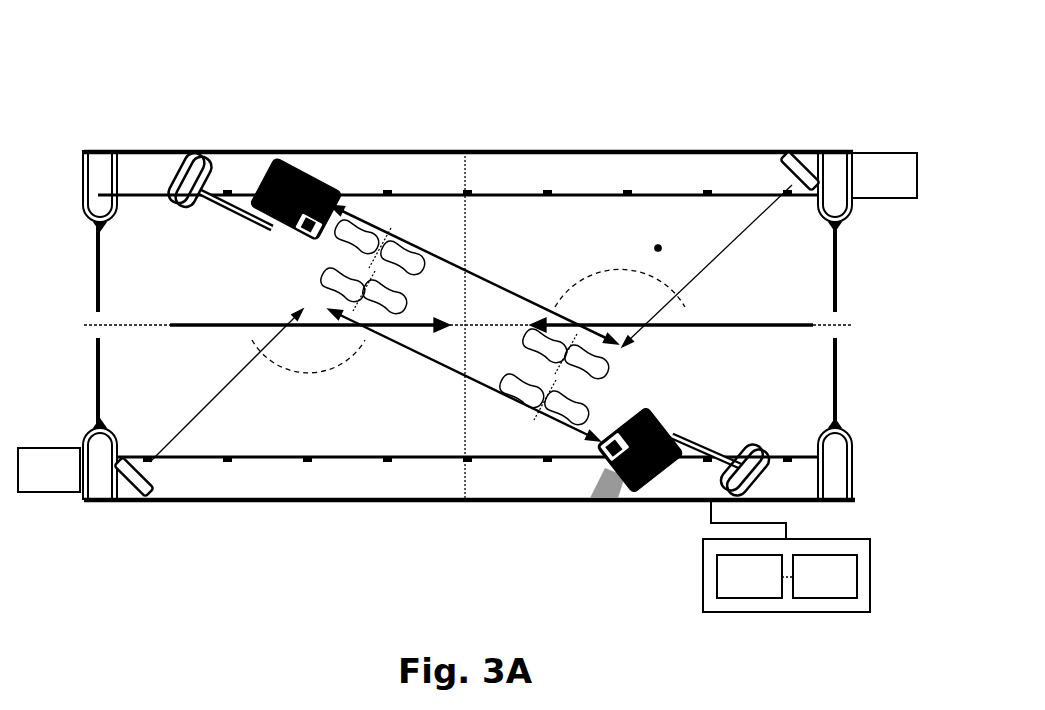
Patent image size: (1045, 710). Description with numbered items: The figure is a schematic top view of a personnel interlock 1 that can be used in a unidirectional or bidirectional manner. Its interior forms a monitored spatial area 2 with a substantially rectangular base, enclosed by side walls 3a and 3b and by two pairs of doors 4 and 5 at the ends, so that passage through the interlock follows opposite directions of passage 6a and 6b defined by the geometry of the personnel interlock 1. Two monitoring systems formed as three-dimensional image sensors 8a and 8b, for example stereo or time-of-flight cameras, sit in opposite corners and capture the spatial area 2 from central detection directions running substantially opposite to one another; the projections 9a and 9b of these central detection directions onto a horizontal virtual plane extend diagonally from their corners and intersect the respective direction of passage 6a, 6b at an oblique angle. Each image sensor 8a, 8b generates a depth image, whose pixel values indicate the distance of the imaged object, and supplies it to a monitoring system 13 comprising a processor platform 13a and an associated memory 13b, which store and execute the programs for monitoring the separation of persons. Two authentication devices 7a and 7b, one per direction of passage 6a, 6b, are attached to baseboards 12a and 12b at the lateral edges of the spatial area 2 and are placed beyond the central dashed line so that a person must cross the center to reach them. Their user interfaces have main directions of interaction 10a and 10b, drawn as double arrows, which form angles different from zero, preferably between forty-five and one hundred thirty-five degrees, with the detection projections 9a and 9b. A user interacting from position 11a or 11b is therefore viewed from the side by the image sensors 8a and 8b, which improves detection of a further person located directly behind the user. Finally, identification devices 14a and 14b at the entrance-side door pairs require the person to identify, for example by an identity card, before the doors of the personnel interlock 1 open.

The personnel interlock 1 is at (848, 112).
The monitored spatial area 2 is at (658, 245).
The side wall 3a is at (530, 152).
The side wall 3b is at (517, 465).
The pair of doors 4 is at (835, 273).
The pair of doors 5 is at (98, 272).
The direction of passage 6a is at (718, 322).
The direction of passage 6b is at (318, 335).
The authentication device 7a is at (310, 164).
The authentication device 7b is at (692, 482).
The 3D image sensor 8a is at (793, 156).
The 3D image sensor 8b is at (128, 476).
The projection of central detection direction 9a is at (735, 265).
The projection of central detection direction 9b is at (235, 383).
The main direction of interaction 10a is at (443, 395).
The main direction of interaction 10b is at (437, 370).
The position 11a is at (366, 243).
The position 11b is at (563, 410).
The baseboard 12a is at (615, 176).
The baseboard 12b is at (240, 476).
The monitoring system 13 is at (818, 556).
The processor platform 13a is at (749, 576).
The memory 13b is at (825, 576).
The identification device 14a is at (884, 175).
The identification device 14b is at (49, 470).